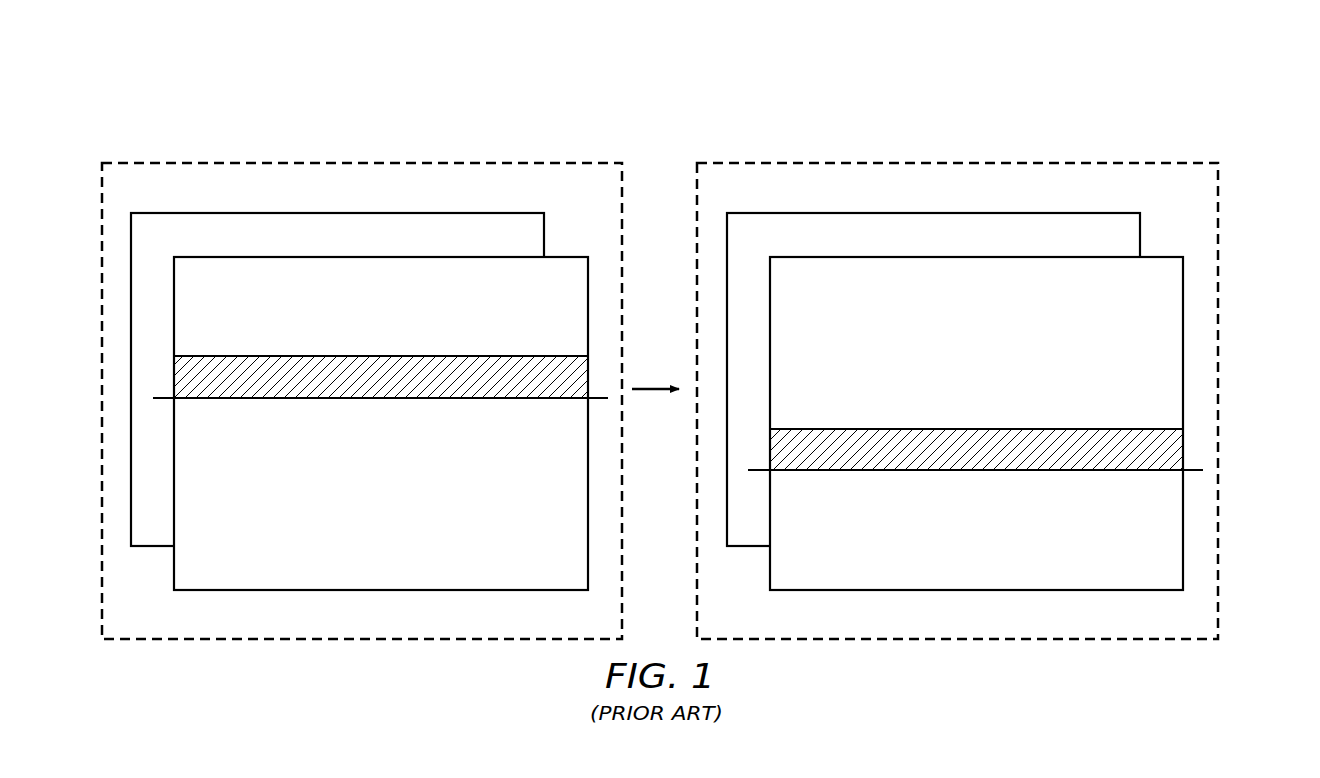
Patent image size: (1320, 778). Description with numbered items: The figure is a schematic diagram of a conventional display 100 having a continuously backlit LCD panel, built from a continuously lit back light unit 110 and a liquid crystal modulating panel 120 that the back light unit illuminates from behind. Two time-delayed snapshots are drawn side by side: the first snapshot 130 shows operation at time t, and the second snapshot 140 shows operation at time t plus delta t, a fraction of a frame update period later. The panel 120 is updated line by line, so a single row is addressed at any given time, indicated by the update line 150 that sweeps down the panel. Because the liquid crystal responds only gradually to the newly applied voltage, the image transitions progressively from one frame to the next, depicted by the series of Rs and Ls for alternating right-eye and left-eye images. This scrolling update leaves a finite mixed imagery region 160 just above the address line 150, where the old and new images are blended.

The conventional display 100 is at (630, 88).
The back light unit 110 is at (272, 213).
The liquid crystal modulating panel 120 is at (382, 590).
The first snapshot 130 is at (102, 370).
The second snapshot 140 is at (1218, 372).
The update line 150 is at (597, 398).
The mixed imagery region 160 is at (573, 367).